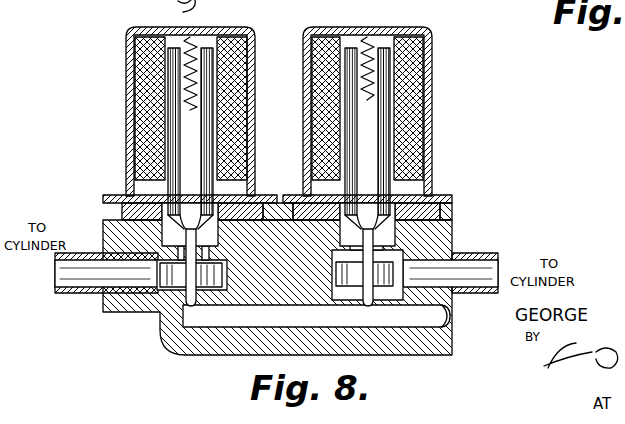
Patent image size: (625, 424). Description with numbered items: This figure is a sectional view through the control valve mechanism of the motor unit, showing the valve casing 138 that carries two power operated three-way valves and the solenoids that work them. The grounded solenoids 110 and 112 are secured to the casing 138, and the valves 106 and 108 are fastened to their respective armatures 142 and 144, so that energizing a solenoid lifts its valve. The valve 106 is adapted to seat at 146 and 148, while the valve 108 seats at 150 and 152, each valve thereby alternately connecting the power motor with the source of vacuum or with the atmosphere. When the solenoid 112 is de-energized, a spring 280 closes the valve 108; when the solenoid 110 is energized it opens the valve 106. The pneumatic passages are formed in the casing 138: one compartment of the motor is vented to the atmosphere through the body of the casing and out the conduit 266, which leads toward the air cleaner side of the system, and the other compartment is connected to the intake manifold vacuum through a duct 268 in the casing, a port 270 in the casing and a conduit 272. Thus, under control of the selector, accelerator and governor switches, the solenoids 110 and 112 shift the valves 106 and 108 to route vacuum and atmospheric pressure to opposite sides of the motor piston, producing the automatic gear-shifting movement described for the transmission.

The valve member 106 is at (176, 286).
The valve member 108 is at (396, 262).
The grounded solenoid 110 is at (126, 75).
The grounded solenoid 112 is at (432, 72).
The casing 138 is at (188, 357).
The armature 142 is at (178, 148).
The armature 144 is at (390, 150).
The valve seat 146 is at (112, 203).
The valve seat 148 is at (178, 303).
The valve seat 150 is at (420, 355).
The valve seat 152 is at (428, 197).
The conduit 266 is at (80, 297).
The duct 268 is at (252, 330).
The port 270 is at (378, 304).
The conduit 272 is at (490, 254).
The spring 280 is at (375, 40).